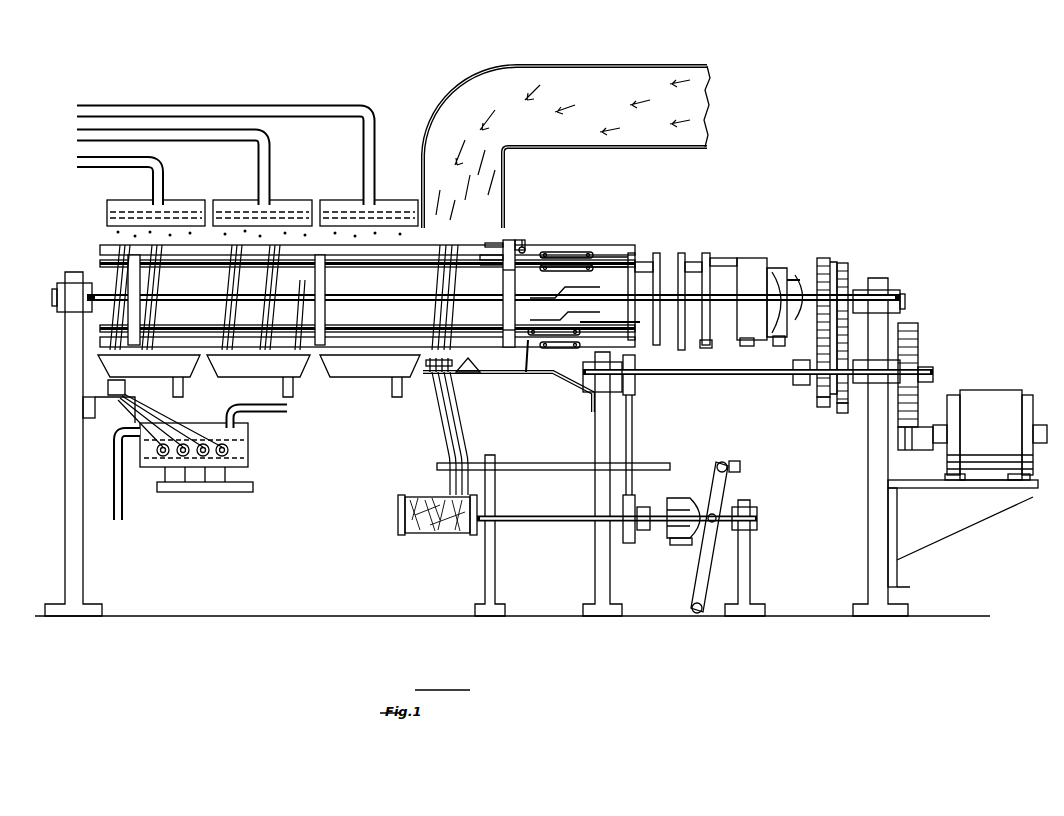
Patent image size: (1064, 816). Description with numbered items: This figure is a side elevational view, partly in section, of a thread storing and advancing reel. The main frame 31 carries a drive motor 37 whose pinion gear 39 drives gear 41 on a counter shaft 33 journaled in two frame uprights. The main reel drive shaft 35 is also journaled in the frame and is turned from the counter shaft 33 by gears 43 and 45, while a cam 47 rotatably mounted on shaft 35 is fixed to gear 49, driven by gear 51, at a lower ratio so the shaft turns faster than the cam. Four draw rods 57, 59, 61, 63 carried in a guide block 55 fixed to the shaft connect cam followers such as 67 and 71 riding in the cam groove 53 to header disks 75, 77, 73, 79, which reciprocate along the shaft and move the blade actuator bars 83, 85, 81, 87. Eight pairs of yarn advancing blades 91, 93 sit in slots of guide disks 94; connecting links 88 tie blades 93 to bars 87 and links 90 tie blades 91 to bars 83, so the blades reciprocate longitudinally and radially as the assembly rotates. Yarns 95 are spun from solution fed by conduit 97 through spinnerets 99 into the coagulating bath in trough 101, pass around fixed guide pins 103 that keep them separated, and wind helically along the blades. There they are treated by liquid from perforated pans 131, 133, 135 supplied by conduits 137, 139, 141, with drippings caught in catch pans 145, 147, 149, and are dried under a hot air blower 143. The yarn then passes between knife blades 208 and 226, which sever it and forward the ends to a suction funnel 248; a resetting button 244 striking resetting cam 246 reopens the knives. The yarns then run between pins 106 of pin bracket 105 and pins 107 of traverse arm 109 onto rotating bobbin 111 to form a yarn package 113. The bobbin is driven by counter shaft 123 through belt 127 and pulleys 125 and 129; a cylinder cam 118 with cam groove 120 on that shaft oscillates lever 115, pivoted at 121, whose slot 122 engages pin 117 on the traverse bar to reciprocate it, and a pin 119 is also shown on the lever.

The main frame 31 is at (83, 556).
The counter shaft 33 is at (918, 348).
The main reel drive shaft 35 is at (60, 283).
The drive motor 37 is at (1000, 395).
The pinion gear 39 is at (905, 450).
The gear 41 is at (918, 378).
The gear 43 is at (826, 407).
The gear 45 is at (848, 270).
The cam 47 is at (820, 258).
The gear 49 is at (830, 262).
The gear 51 is at (808, 388).
The cam groove 53 is at (805, 270).
The guide block 55 is at (752, 258).
The draw rod 57 is at (712, 345).
The draw rod 59 is at (746, 341).
The draw rod 61 is at (722, 258).
The draw rod 63 is at (770, 280).
The cam follower 67 is at (782, 342).
The cam follower 71 is at (790, 285).
The header disk 73 is at (706, 253).
The header disk 75 is at (682, 253).
The header disk 77 is at (632, 253).
The header disk 79 is at (640, 262).
The blade actuator bars 81 is at (692, 262).
The blade actuator bars 83 is at (657, 253).
The blade actuator bars 85 is at (612, 322).
The blade actuator bars 87 is at (600, 257).
The connecting links 88 is at (565, 252).
The connecting links 90 is at (548, 297).
The yarn advancing blade 91 is at (222, 296).
The yarn advancing blade 93 is at (198, 300).
The guide disks 94 is at (325, 314).
The yarns 95 is at (118, 427).
The conduit 97 is at (242, 492).
The spinnerets 99 is at (220, 443).
The trough 101 is at (248, 445).
The guide pins 103 is at (108, 385).
The pin bracket 105 is at (512, 376).
The pins 106 is at (432, 374).
The pins 107 is at (470, 455).
The traverse arm 109 is at (558, 470).
The bobbin 111 is at (398, 510).
The yarn package 113 is at (440, 535).
The lever 115 is at (718, 500).
The pin 117 is at (722, 462).
The cylinder cam 118 is at (675, 545).
The pin 119 is at (716, 521).
The cam groove 120 is at (685, 498).
The pivot 121 is at (692, 606).
The slot 122 is at (740, 466).
The counter shaft 123 is at (645, 507).
The pulley 125 is at (635, 470).
The belt 127 is at (635, 420).
The pulley 129 is at (640, 378).
The perforated pan 131 is at (107, 205).
The perforated pan 133 is at (230, 200).
The perforated pan 135 is at (340, 200).
The conduit 137 is at (77, 160).
The conduit 139 is at (77, 131).
The conduit 141 is at (85, 107).
The hot air blower 143 is at (505, 180).
The catch pan 145 is at (190, 375).
The catch pan 147 is at (240, 375).
The catch pan 149 is at (355, 378).
The knife blade 208 is at (508, 252).
The knife blade 226 is at (500, 272).
The resetting button 244 is at (528, 245).
The resetting cam 246 is at (528, 374).
The suction funnel 248 is at (470, 374).